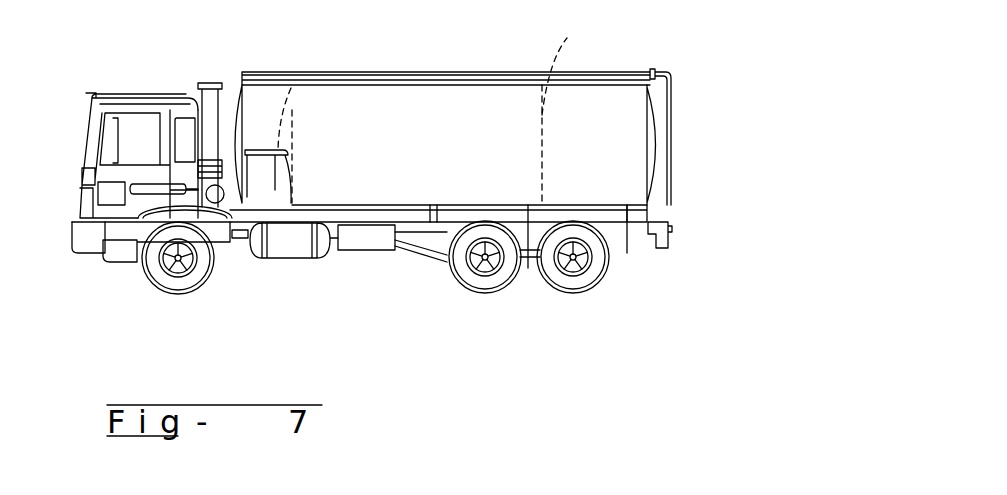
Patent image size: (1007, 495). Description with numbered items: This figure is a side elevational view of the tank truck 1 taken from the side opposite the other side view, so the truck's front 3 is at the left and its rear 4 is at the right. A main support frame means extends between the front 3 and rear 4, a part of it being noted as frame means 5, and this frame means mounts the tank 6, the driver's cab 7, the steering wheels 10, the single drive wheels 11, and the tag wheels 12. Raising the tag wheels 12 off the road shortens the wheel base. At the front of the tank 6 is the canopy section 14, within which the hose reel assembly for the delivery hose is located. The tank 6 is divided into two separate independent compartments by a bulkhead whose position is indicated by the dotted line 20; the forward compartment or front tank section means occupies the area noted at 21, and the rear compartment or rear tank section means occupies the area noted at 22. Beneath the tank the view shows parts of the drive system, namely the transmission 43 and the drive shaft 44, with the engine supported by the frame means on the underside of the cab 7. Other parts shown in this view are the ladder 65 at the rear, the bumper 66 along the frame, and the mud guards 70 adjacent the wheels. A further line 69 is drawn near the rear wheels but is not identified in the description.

The tank truck 1 is at (458, 58).
The front 3 is at (77, 137).
The rear 4 is at (766, 143).
The frame means 5 is at (85, 233).
The tank 6 is at (475, 156).
The driver's cab 7 is at (133, 93).
The steering wheels 10 is at (163, 277).
The single drive wheels 11 is at (488, 280).
The tag wheels 12 is at (577, 280).
The canopy section 14 is at (260, 102).
The dotted line 20 is at (575, 115).
The forward compartment 21 is at (374, 155).
The rear compartment 22 is at (626, 163).
The transmission 43 is at (242, 247).
The drive shaft 44 is at (420, 253).
The ladder 65 is at (670, 73).
The bumper 66 is at (368, 240).
The support line 69 is at (528, 230).
The mud guards 70 is at (438, 230).